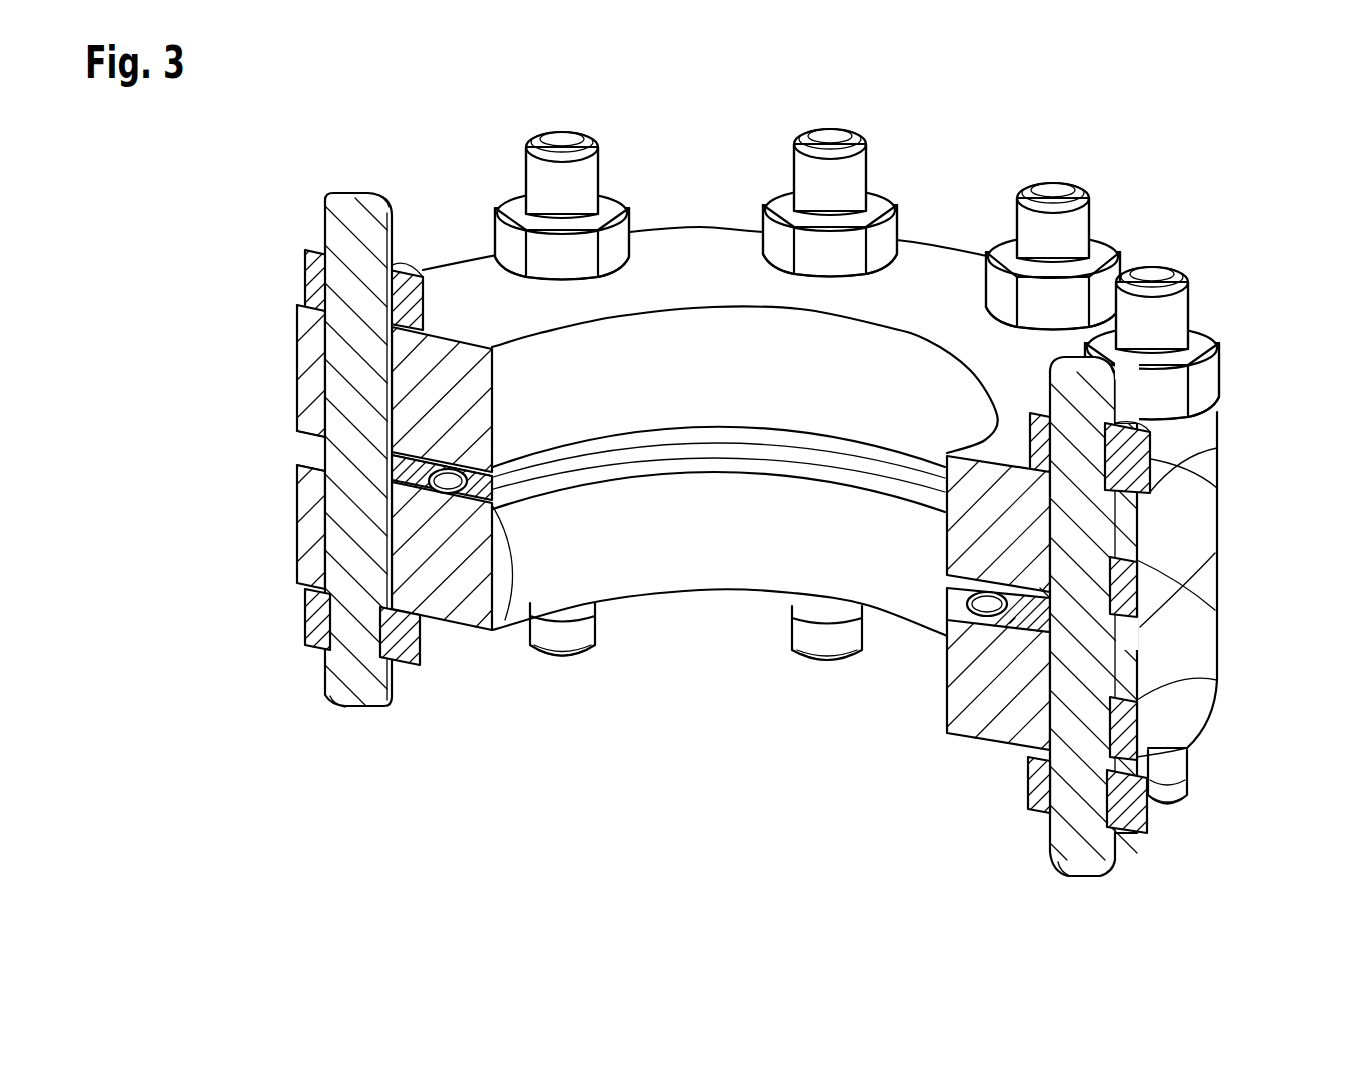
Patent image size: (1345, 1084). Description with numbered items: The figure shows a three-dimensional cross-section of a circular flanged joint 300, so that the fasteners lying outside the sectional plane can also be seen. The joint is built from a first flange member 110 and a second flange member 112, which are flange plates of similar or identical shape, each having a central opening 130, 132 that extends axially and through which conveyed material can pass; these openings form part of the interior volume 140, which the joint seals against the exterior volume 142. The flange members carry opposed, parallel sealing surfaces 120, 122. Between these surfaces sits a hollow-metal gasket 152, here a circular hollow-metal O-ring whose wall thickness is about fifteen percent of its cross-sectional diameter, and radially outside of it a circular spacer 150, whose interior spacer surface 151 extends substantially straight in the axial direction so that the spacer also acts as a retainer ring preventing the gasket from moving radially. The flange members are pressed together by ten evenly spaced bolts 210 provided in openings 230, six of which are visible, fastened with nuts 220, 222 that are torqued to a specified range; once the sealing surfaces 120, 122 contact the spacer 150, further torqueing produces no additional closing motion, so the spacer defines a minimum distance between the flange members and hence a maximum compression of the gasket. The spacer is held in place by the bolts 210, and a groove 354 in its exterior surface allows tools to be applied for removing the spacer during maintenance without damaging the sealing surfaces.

The first flange member 110 is at (297, 362).
The second flange member 112 is at (297, 530).
The first sealing surface 120 is at (305, 437).
The second sealing surface 122 is at (300, 461).
The opening of the first flange member 130 is at (700, 305).
The opening of the second flange member 132 is at (700, 600).
The interior volume 140 is at (702, 378).
The exterior volume 142 is at (127, 442).
The spacer 150 is at (400, 484).
The interior spacer surface 151 is at (408, 488).
The hollow-metal gasket 152 is at (412, 480).
The bolts 210 is at (360, 193).
The nut 220 is at (303, 607).
The nut 222 is at (297, 268).
The openings 230 is at (297, 398).
The flanged joint 300 is at (355, 818).
The groove 354 is at (305, 483).